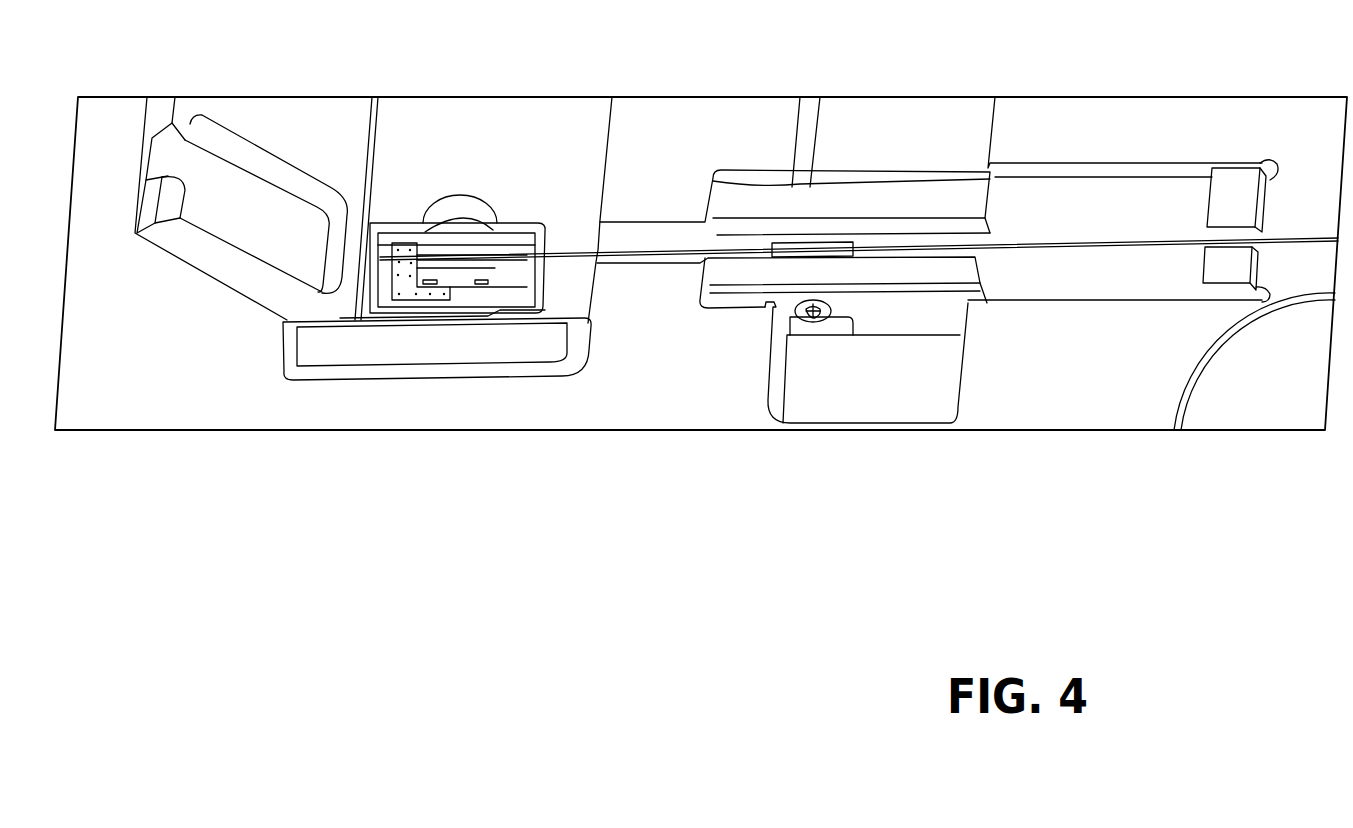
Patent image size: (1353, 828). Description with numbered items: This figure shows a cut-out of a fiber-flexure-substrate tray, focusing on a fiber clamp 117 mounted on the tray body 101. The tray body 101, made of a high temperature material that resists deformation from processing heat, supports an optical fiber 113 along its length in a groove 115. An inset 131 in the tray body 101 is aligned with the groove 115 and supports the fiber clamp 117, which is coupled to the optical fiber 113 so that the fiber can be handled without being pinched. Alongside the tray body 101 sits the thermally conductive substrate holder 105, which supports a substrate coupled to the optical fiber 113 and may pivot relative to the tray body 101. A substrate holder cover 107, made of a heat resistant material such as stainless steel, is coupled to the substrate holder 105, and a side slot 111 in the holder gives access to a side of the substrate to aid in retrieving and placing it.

The tray body 101 is at (162, 383).
The thermally conductive substrate holder 105 is at (398, 342).
The substrate holder cover 107 is at (237, 140).
The side slot 111 is at (462, 205).
The optical fiber 113 is at (562, 258).
The groove 115 is at (665, 240).
The fiber clamp 117 is at (897, 300).
The inset 131 is at (1263, 297).